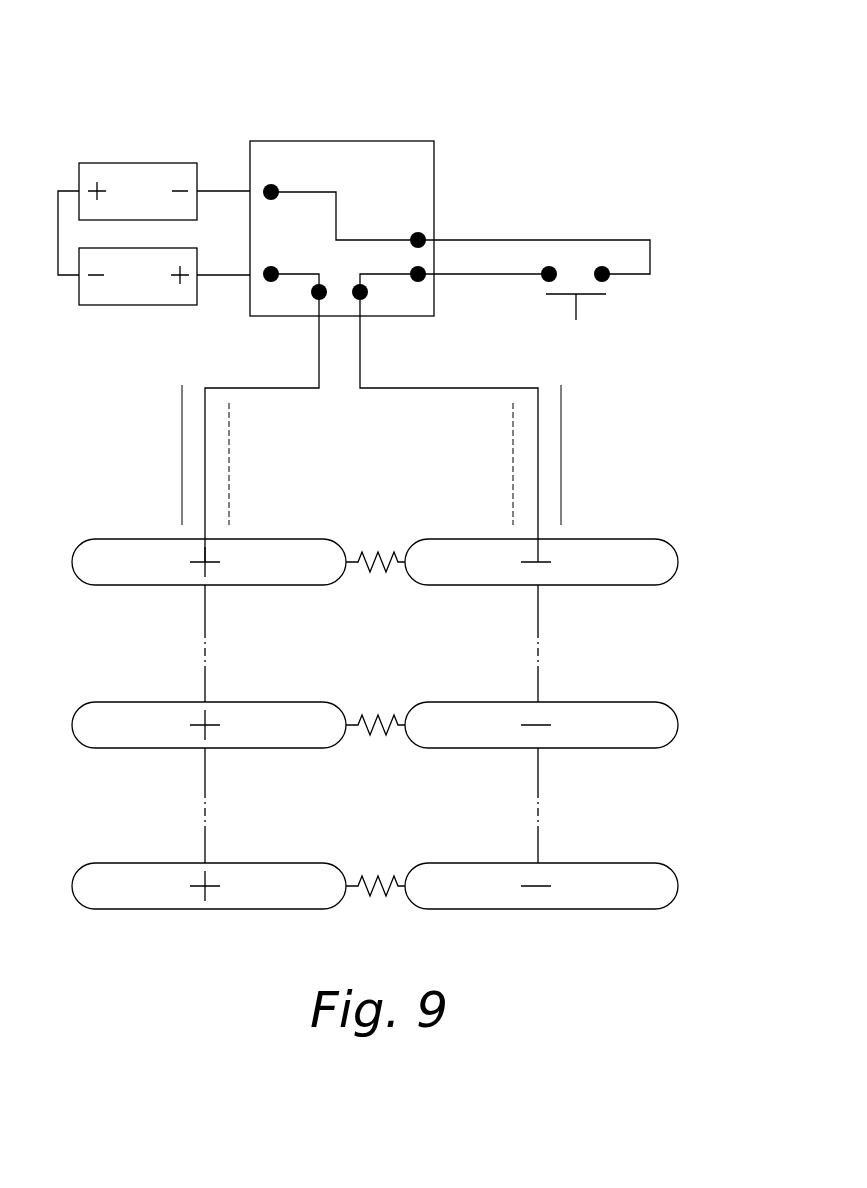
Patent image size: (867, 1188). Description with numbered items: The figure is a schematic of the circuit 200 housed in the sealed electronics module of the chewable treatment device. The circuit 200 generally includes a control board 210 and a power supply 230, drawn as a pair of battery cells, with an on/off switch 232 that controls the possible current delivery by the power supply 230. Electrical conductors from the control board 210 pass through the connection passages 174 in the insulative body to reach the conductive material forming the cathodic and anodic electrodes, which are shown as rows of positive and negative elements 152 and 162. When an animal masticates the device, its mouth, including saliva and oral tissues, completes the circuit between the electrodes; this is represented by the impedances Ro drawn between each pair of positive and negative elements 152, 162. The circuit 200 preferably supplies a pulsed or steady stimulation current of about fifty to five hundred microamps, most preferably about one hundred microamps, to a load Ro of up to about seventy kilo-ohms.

The circuit 200 is at (566, 173).
The control board 210 is at (359, 152).
The power supply 230 is at (138, 180).
The on/off switch 232 is at (587, 297).
The connection passage 174 is at (180, 455).
The positive electrode 152 is at (247, 552).
The negative electrode 162 is at (598, 553).
The impedance Ro is at (370, 884).